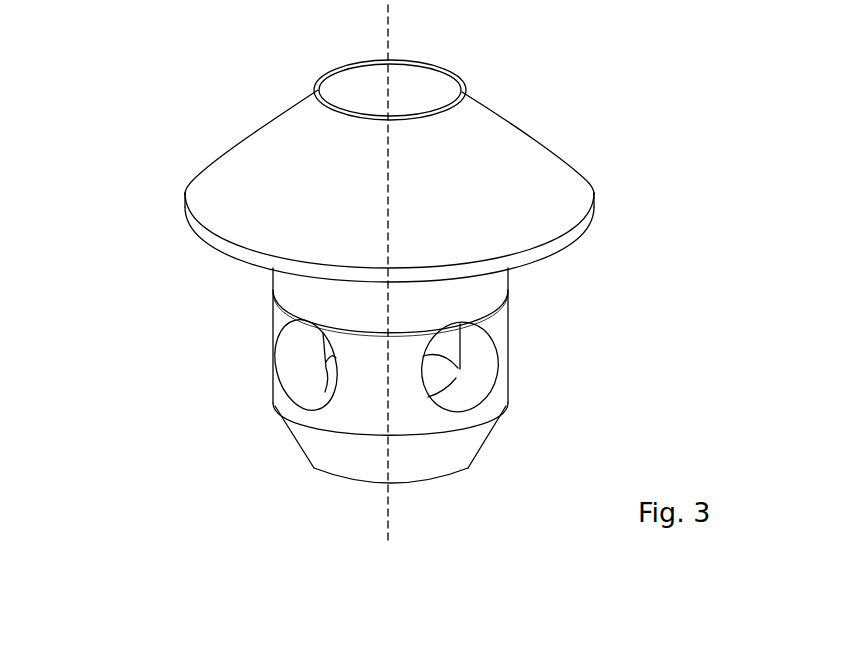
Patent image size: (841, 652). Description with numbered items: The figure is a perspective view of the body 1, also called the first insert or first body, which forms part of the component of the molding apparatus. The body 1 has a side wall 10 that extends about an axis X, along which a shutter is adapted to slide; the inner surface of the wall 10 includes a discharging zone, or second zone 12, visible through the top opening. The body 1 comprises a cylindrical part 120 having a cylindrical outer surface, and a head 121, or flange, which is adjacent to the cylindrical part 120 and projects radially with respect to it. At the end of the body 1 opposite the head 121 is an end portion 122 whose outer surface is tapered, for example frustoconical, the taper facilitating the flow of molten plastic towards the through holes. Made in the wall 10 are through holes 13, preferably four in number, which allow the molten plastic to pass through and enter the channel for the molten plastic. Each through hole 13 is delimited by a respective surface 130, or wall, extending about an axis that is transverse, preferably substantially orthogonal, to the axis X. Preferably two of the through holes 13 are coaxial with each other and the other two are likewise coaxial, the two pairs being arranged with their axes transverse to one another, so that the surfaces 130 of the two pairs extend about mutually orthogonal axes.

The body 1 is at (158, 325).
The wall 10 is at (322, 88).
The second zone 12 is at (417, 92).
The through hole 13 is at (327, 378).
The cylindrical part 120 is at (502, 330).
The head 121 is at (495, 155).
The end portion 122 is at (332, 453).
The surface 130 is at (293, 350).
The axis X is at (390, 46).